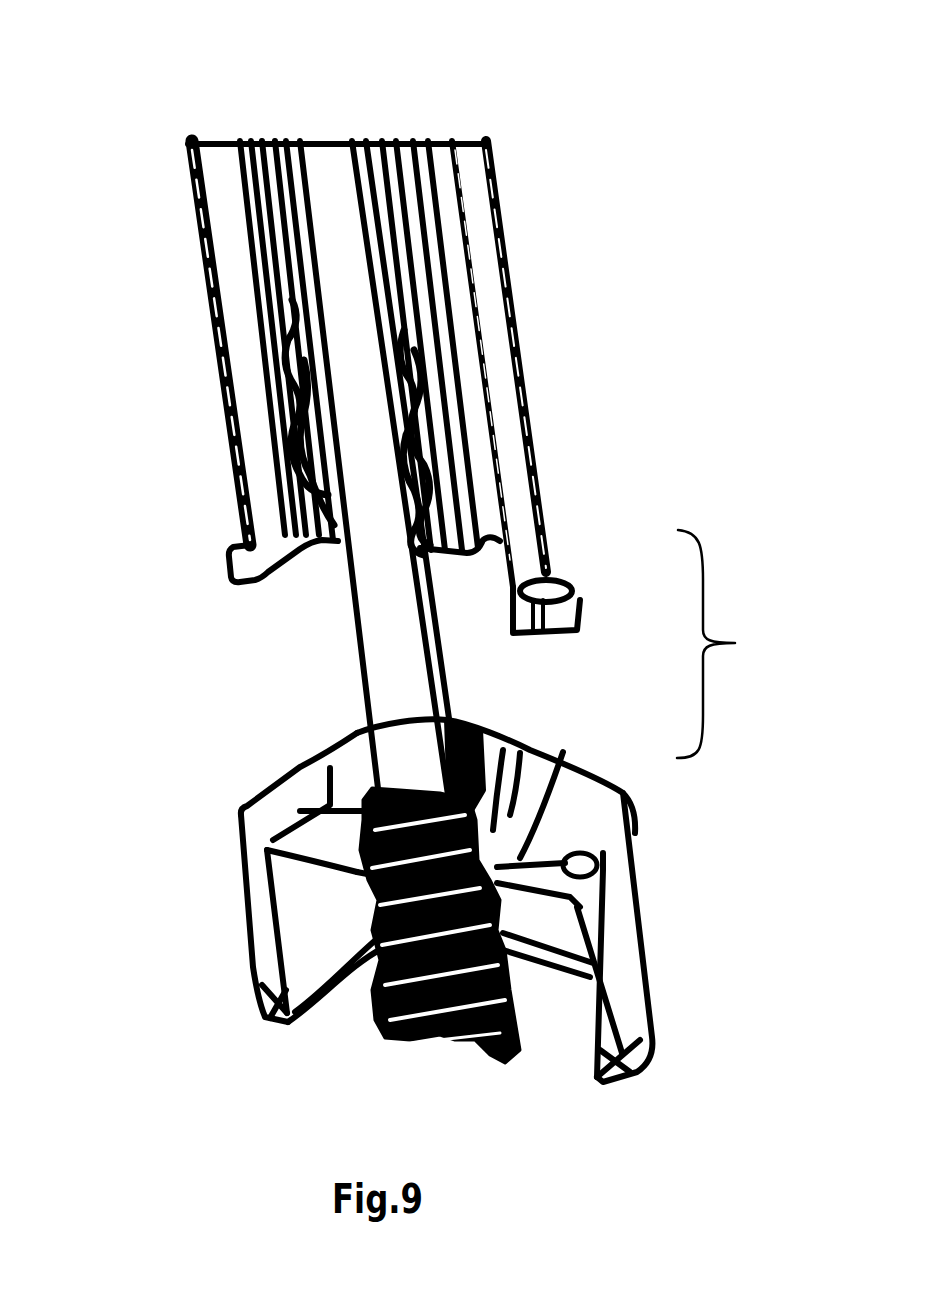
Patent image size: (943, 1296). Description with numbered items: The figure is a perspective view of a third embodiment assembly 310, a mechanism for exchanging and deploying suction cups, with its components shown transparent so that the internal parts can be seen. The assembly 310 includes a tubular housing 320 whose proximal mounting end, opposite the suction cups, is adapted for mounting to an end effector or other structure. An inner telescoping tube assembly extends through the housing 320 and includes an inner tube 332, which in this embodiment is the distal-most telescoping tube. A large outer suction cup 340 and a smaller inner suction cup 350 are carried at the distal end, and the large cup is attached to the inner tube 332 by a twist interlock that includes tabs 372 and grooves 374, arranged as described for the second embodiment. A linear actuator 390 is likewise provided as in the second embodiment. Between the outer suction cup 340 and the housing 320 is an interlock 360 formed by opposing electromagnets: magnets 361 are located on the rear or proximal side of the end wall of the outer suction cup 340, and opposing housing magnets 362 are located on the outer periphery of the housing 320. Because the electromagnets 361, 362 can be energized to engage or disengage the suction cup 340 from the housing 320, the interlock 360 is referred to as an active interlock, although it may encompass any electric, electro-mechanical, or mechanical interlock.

The third embodiment assembly 310 is at (662, 103).
The tubular housing 320 is at (220, 427).
The inner tube 332 is at (347, 600).
The outer suction cup 340 is at (260, 897).
The inner suction cup 350 is at (370, 1038).
The interlock 360 is at (731, 644).
The magnets 361 is at (580, 858).
The housing magnets 362 is at (547, 580).
The tabs 372 is at (357, 872).
The grooves 374 is at (562, 772).
The linear actuator 390 is at (327, 135).